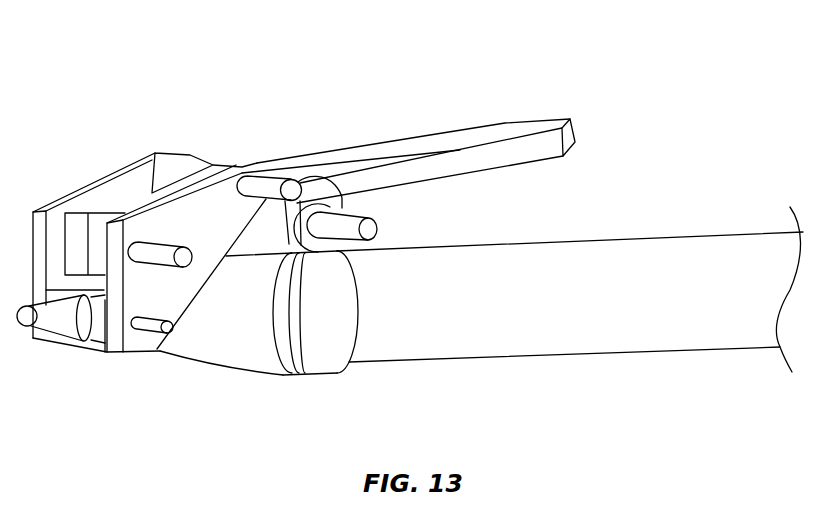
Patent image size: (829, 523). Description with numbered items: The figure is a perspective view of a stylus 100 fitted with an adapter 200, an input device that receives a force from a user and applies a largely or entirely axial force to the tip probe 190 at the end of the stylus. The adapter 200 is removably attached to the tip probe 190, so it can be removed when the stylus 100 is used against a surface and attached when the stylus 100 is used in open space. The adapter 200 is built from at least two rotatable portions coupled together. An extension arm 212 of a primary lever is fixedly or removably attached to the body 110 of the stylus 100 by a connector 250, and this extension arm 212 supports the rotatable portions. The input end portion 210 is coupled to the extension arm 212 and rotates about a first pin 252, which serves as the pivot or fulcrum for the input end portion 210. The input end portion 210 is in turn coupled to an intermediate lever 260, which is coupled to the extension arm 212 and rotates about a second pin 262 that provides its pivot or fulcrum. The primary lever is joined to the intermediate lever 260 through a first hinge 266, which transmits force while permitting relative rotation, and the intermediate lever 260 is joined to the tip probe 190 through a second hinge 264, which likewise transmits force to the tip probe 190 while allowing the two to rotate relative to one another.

The stylus 100 is at (46, 64).
The body 110 is at (620, 357).
The tip probe 190 is at (20, 327).
The adapter 200 is at (85, 180).
The input end portion 210 is at (421, 138).
The extension arm 212 is at (250, 262).
The connector 250 is at (307, 355).
The first pin 252 is at (378, 228).
The intermediate lever 260 is at (201, 228).
The second pin 262 is at (160, 256).
The second hinge 264 is at (163, 353).
The first hinge 266 is at (344, 200).